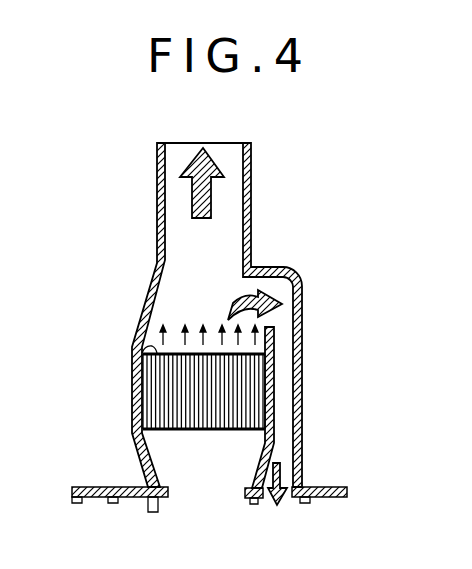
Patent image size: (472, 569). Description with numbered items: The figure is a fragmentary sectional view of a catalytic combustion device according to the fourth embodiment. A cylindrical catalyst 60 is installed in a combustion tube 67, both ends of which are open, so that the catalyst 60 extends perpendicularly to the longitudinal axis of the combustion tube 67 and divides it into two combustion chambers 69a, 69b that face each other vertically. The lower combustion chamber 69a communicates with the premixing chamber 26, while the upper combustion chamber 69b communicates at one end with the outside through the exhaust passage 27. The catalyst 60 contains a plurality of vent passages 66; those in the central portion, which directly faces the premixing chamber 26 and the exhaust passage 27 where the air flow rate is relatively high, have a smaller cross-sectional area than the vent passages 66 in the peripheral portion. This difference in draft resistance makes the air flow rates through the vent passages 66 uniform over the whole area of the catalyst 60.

The combustion tube 67 is at (152, 273).
The combustion chamber 69b is at (197, 312).
The cylindrical catalyst 60 is at (135, 348).
The vent passages 66 is at (250, 385).
The exhaust passage 27 is at (277, 430).
The combustion chamber 69a is at (240, 447).
The premixing chamber 26 is at (188, 503).